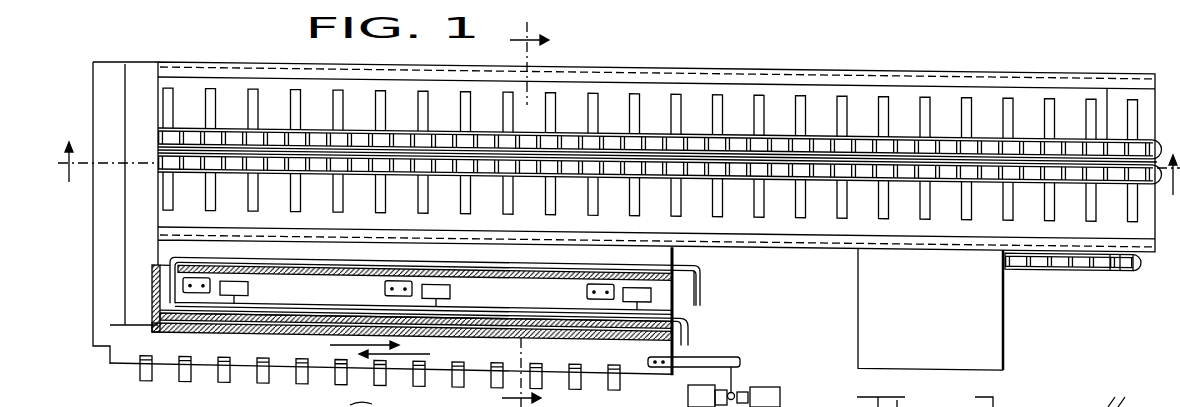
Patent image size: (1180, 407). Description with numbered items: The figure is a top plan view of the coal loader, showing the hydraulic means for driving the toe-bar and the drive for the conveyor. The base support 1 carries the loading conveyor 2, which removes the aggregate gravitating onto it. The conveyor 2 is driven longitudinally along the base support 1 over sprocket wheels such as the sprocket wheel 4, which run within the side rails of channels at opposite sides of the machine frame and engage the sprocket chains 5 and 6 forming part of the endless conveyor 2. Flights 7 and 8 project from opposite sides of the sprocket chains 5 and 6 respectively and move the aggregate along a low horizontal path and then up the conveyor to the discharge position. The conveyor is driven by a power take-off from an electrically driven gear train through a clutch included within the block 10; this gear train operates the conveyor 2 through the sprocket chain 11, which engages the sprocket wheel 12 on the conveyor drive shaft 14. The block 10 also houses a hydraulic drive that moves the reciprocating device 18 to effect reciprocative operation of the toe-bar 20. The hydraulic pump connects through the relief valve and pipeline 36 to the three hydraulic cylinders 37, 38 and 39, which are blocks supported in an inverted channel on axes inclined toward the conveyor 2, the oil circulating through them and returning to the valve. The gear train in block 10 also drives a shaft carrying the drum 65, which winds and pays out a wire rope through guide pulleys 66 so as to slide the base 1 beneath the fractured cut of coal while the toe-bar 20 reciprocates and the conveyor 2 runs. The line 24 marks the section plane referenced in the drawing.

The base support 1 is at (105, 222).
The conveyor 2 is at (614, 123).
The sprocket wheel 4 is at (525, 206).
The sprocket chain 5 is at (193, 127).
The sprocket chain 6 is at (197, 173).
The flights 7 is at (650, 123).
The flights 8 is at (247, 187).
The block 10 is at (992, 336).
The sprocket chain 11 is at (1055, 268).
The sprocket wheel 12 is at (1105, 268).
The conveyor drive shaft 14 is at (1113, 92).
The reciprocating device 18 is at (756, 383).
The toe-bar 20 is at (636, 355).
The section line XXIV 24 is at (602, 186).
The pipeline 36 is at (687, 328).
The hydraulic cylinder 37 is at (248, 287).
The hydraulic cylinder 38 is at (450, 289).
The hydraulic cylinder 39 is at (650, 293).
The drum 65 is at (380, 381).
The guide pulleys 66 is at (612, 370).